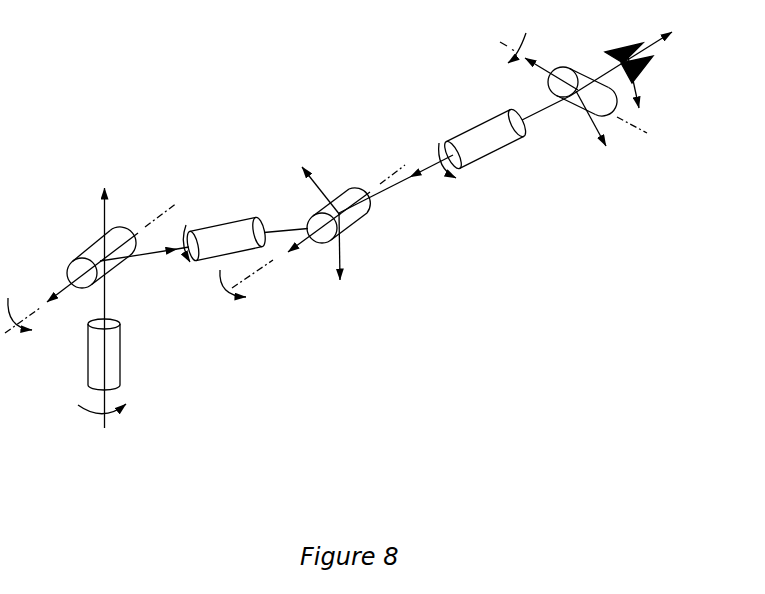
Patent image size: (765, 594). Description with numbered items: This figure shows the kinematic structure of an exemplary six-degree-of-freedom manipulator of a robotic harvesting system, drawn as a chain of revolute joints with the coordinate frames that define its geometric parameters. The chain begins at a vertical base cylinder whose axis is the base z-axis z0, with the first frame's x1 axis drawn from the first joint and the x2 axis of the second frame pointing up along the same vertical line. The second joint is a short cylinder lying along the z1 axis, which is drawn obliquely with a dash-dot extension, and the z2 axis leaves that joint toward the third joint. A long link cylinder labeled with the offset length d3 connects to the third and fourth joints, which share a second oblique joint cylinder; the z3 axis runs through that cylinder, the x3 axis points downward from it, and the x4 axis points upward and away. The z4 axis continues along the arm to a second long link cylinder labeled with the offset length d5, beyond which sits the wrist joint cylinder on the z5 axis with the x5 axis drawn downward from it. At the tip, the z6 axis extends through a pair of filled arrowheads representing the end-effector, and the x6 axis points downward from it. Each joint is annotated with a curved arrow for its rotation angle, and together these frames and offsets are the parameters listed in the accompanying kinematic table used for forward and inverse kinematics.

The base z-axis z0 is at (88, 220).
The x2 axis x2 is at (118, 260).
The z1 axis z1 is at (91, 268).
The x1 axis x1 is at (126, 269).
The z2 axis z2 is at (164, 243).
The offset length d3 is at (246, 231).
The z3 axis z3 is at (318, 226).
The x4 axis x4 is at (311, 179).
The x3 axis x3 is at (353, 257).
The z4 axis z4 is at (396, 184).
The offset length d5 is at (485, 138).
The z5 axis z5 is at (573, 87).
The x5 axis x5 is at (591, 128).
The z6 axis z6 is at (603, 76).
The x6 axis x6 is at (647, 90).